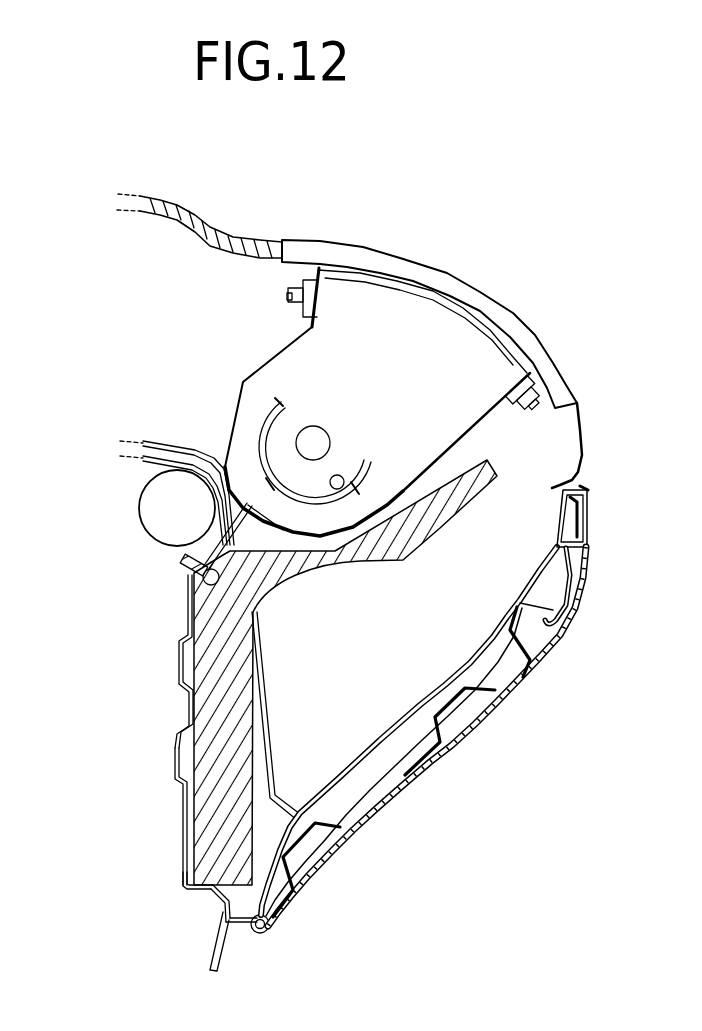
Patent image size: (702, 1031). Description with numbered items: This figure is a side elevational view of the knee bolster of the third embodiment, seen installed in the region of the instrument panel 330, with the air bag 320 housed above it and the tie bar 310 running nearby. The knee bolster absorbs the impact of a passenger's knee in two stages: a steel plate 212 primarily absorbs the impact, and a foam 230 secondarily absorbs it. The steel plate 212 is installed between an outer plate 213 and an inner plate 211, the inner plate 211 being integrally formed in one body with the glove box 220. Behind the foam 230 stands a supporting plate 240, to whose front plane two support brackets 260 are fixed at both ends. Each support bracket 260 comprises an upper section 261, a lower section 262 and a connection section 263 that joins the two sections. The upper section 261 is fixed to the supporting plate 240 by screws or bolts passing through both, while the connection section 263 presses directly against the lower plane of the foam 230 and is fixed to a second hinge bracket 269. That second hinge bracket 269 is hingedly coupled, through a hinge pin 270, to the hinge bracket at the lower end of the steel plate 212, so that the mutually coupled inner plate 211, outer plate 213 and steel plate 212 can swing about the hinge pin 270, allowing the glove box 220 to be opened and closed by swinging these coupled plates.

The inner plate 211 is at (530, 573).
The steel plate 212 is at (405, 780).
The outer plate 213 is at (495, 700).
The glove box 220 is at (267, 722).
The foam 230 is at (250, 583).
The supporting plate 240 is at (178, 670).
The support bracket 260 is at (205, 912).
The upper section 261 is at (185, 822).
The lower section 262 is at (207, 967).
The connection section 263 is at (186, 888).
The second hinge bracket 269 is at (243, 927).
The hinge pin 270 is at (267, 933).
The tie bar 310 is at (138, 505).
The air bag 320 is at (257, 420).
The instrument panel 330 is at (247, 229).